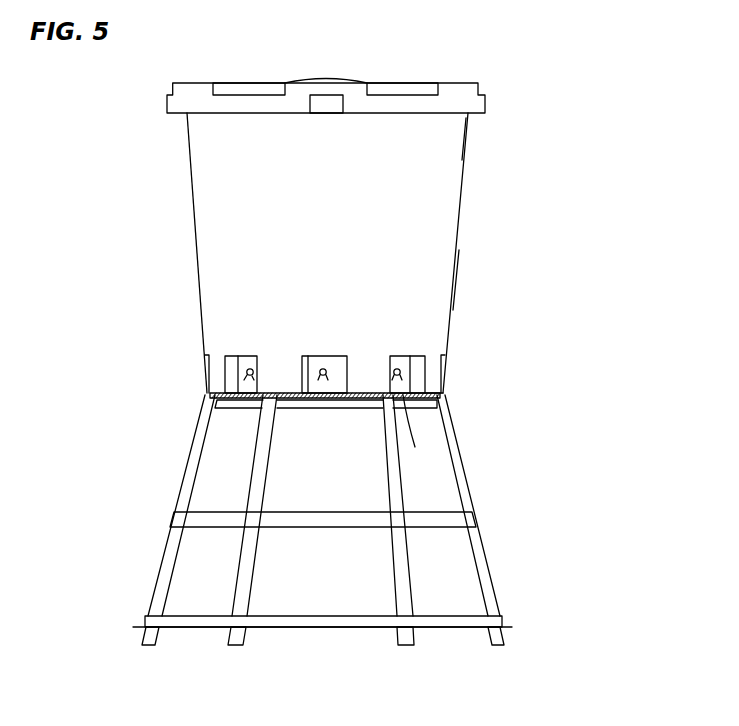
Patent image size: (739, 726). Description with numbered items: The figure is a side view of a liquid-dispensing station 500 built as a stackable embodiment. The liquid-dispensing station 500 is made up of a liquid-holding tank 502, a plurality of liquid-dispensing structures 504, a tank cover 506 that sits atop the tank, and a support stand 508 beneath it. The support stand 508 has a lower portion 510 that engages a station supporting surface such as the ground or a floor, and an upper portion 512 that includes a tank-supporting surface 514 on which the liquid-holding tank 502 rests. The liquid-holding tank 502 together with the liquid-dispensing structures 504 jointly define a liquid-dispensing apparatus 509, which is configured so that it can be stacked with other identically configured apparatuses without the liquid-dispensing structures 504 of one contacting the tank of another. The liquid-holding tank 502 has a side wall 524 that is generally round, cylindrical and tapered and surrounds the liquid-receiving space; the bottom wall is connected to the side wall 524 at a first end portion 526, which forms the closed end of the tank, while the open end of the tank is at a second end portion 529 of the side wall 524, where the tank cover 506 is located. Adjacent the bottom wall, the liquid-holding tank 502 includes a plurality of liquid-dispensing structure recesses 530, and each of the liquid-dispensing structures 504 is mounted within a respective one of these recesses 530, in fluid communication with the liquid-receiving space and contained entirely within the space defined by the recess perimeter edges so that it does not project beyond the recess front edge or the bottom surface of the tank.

The liquid-dispensing station 500 is at (536, 68).
The liquid-holding tank 502 is at (453, 155).
The liquid-dispensing structures 504 is at (252, 365).
The tank cover 506 is at (477, 107).
The support stand 508 is at (335, 527).
The liquid-dispensing apparatus 509 is at (442, 240).
The lower portion 510 is at (497, 640).
The upper portion 512 is at (448, 427).
The tank-supporting surface 514 is at (443, 393).
The side wall 524 is at (413, 307).
The first end portion 526 is at (433, 378).
The second end portion 529 is at (457, 127).
The liquid-dispensing structure recesses 530 is at (242, 382).